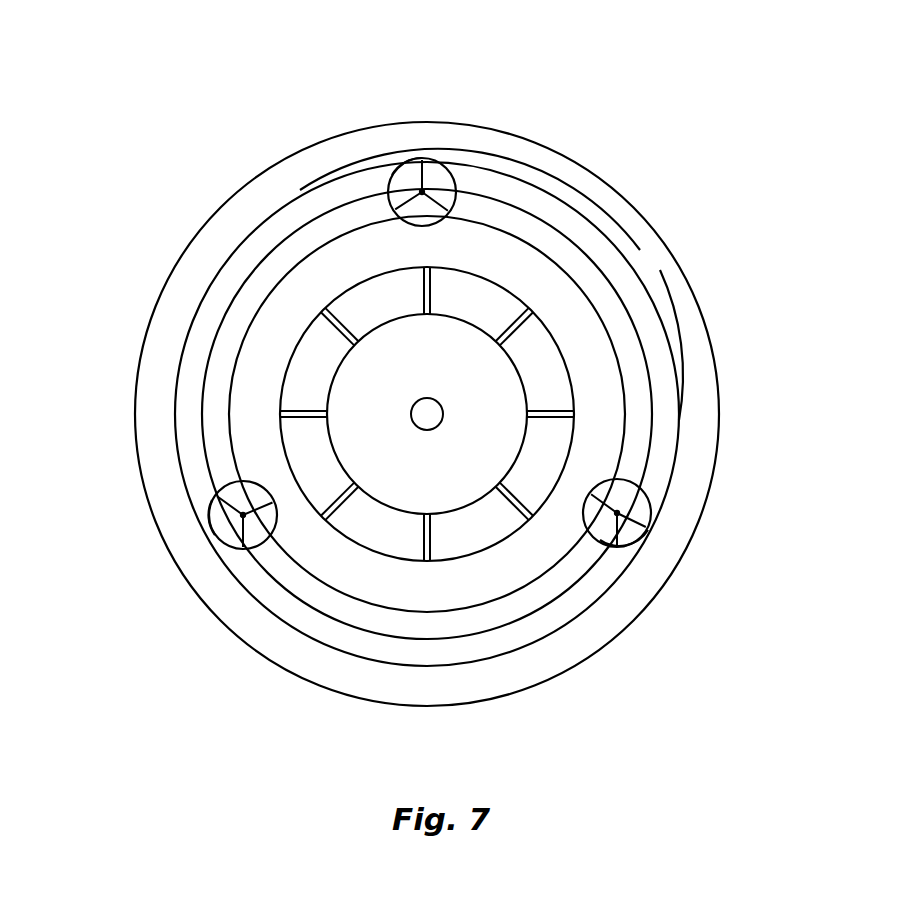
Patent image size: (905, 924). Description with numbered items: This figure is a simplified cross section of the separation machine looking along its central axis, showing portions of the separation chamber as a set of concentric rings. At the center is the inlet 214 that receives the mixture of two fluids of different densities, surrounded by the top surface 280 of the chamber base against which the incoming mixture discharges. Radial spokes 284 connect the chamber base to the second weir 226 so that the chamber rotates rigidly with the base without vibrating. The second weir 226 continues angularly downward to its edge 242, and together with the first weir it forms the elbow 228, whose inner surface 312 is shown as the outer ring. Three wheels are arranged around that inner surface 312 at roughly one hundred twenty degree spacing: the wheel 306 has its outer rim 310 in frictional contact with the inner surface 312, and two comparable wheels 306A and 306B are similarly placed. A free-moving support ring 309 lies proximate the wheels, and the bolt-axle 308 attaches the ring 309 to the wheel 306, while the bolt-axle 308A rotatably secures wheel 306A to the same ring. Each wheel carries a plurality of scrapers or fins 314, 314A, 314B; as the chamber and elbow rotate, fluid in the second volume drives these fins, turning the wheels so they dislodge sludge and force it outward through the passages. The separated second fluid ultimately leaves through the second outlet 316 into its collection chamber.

The inlet 214 is at (443, 416).
The second weir 226 is at (507, 612).
The elbow 228 is at (677, 298).
The edge 242 is at (577, 388).
The top surface 280 is at (427, 414).
The spoke 284 is at (533, 332).
The wheel 306 is at (627, 480).
The wheel 306A is at (455, 205).
The wheel 306B is at (222, 502).
The bolt-axle combination 308 is at (646, 527).
The bolt-axle 308A is at (422, 193).
The support ring 309 is at (568, 236).
The outer rim 310 is at (643, 491).
The inner surface 312 is at (230, 253).
The fins 314 is at (638, 548).
The fins 314A is at (405, 165).
The fins 314B is at (215, 513).
The second outlet 316 is at (408, 533).